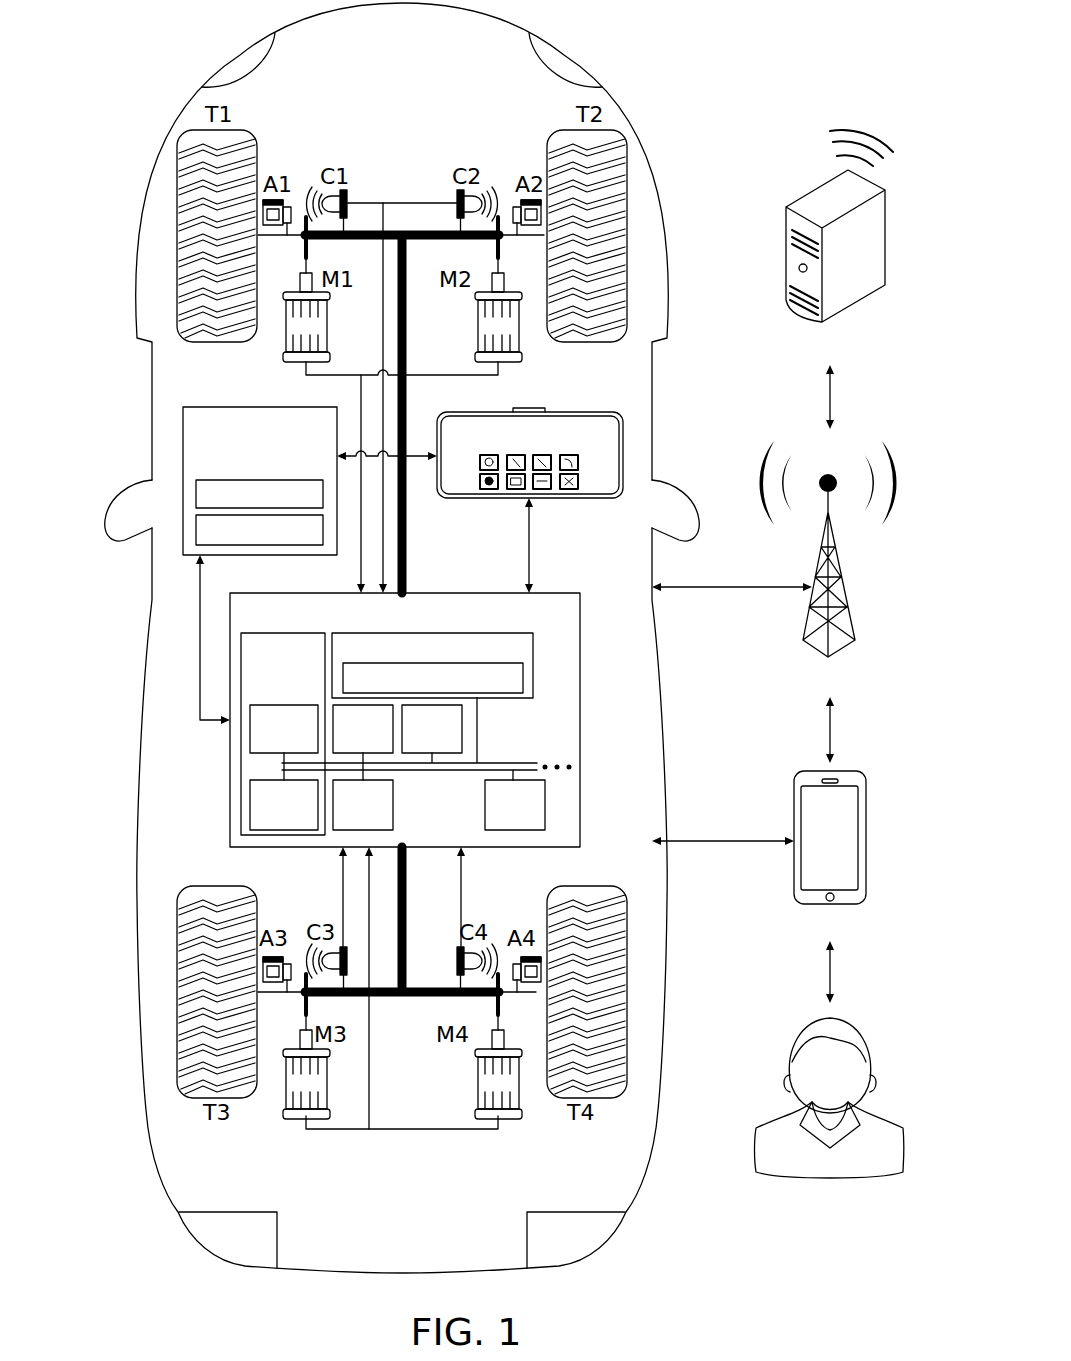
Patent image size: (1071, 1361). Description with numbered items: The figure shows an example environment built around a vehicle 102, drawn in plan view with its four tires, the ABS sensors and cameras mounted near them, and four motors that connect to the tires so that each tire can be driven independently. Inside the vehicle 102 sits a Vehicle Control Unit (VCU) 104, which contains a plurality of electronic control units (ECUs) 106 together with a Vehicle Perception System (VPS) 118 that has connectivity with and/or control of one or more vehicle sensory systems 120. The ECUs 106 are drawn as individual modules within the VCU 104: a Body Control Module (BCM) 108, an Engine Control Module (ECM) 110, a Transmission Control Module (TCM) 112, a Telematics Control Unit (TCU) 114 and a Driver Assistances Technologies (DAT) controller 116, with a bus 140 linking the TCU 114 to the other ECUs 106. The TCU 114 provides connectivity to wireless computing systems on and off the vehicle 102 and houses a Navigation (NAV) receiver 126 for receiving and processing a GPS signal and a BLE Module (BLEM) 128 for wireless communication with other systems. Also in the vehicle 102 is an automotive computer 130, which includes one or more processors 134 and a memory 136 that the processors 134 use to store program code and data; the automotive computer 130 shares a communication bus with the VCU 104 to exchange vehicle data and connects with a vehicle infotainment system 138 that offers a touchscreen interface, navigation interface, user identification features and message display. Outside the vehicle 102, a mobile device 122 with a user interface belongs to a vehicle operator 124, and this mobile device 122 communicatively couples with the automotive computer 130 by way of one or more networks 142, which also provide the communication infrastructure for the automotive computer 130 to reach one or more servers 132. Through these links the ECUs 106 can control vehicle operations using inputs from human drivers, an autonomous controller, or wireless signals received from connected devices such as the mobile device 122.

The vehicle 102 is at (137, 912).
The Vehicle Control Unit (VCU) 104 is at (230, 607).
The electronic control units (ECUs) 106 is at (550, 713).
The Body Control Module (BCM) 108 is at (387, 753).
The Engine Control Module (ECM) 110 is at (447, 753).
The Transmission Control Module (TCM) 112 is at (343, 830).
The Telematics Control Unit (TCU) 114 is at (241, 655).
The Driver Assistances Technologies (DAT) controller 116 is at (545, 803).
The Vehicle Perception System (VPS) 118 is at (534, 643).
The vehicle sensory system 120 is at (523, 677).
The mobile device 122 is at (865, 772).
The vehicle operator 124 is at (790, 1048).
The Navigation (NAV) receiver 126 is at (250, 741).
The BLE Module (BLEM) 128 is at (250, 801).
The automotive computer 130 is at (183, 425).
The server 132 is at (810, 188).
The processor 134 is at (196, 494).
The memory 136 is at (196, 532).
The vehicle infotainment system 138 is at (623, 440).
The bus 140 is at (522, 762).
The network 142 is at (846, 560).